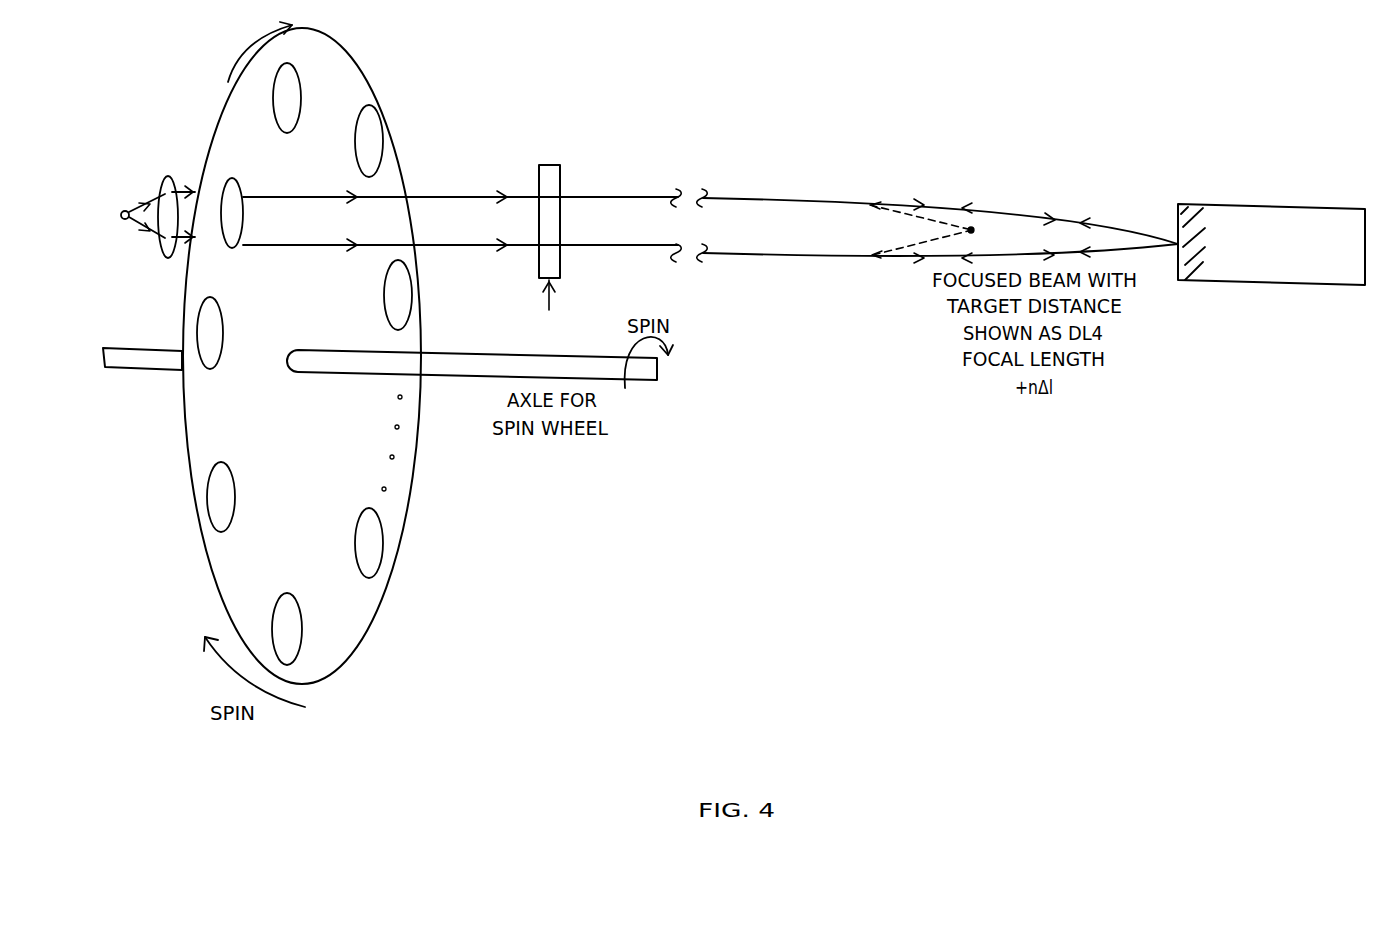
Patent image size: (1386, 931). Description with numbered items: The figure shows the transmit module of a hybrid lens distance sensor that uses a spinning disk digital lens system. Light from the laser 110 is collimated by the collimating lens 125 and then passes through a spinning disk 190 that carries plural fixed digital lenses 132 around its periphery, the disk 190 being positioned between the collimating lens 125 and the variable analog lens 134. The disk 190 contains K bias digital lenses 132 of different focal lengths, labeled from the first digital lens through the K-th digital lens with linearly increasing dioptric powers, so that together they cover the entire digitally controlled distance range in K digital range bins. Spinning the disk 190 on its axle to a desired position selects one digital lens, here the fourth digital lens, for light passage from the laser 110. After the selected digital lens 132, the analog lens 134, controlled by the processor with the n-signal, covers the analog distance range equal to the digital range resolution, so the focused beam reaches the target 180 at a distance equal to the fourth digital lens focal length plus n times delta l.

The laser 110 is at (123, 211).
The collimating lens 125 is at (167, 178).
The fixed digital lens 132 is at (274, 617).
The variable analog lens 134 is at (538, 184).
The target 180 is at (1278, 206).
The spinning disk 190 is at (376, 609).